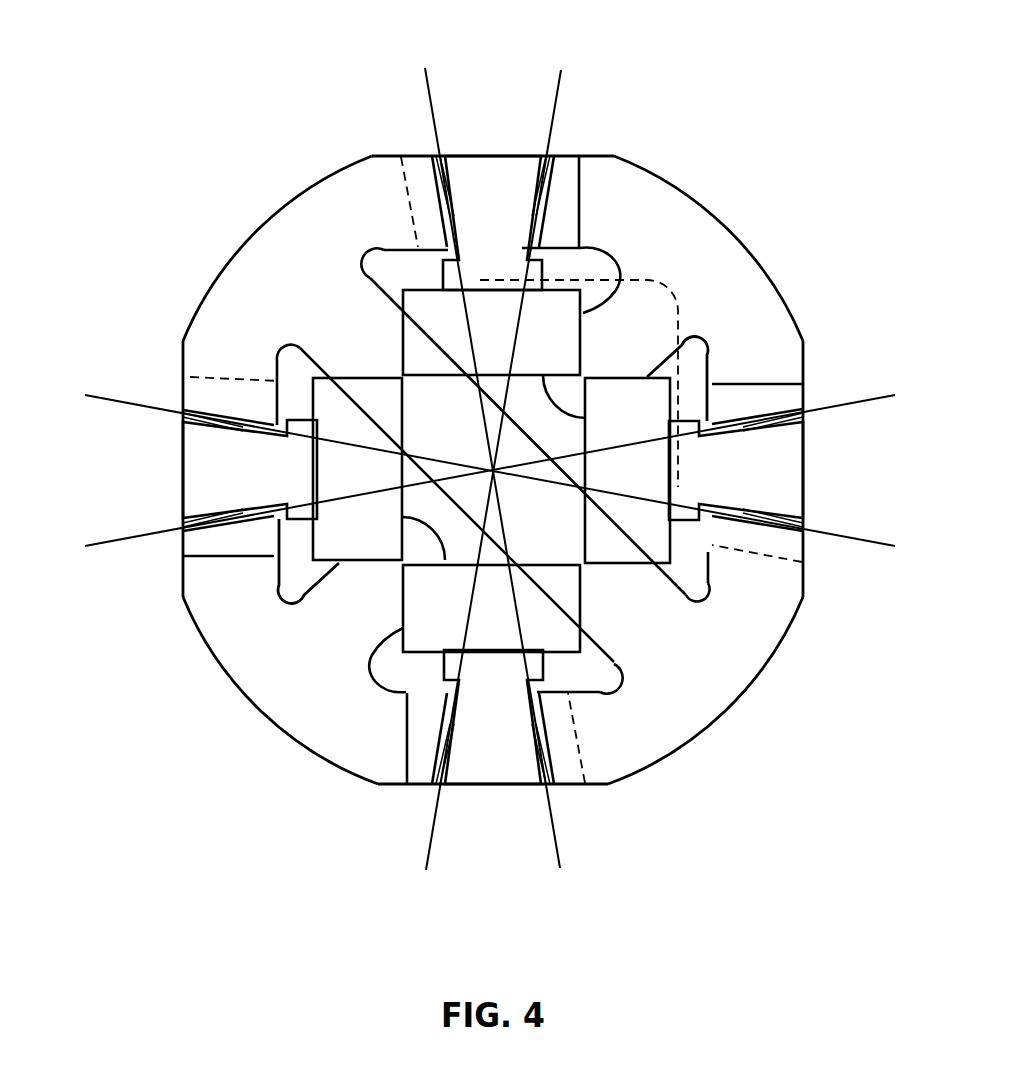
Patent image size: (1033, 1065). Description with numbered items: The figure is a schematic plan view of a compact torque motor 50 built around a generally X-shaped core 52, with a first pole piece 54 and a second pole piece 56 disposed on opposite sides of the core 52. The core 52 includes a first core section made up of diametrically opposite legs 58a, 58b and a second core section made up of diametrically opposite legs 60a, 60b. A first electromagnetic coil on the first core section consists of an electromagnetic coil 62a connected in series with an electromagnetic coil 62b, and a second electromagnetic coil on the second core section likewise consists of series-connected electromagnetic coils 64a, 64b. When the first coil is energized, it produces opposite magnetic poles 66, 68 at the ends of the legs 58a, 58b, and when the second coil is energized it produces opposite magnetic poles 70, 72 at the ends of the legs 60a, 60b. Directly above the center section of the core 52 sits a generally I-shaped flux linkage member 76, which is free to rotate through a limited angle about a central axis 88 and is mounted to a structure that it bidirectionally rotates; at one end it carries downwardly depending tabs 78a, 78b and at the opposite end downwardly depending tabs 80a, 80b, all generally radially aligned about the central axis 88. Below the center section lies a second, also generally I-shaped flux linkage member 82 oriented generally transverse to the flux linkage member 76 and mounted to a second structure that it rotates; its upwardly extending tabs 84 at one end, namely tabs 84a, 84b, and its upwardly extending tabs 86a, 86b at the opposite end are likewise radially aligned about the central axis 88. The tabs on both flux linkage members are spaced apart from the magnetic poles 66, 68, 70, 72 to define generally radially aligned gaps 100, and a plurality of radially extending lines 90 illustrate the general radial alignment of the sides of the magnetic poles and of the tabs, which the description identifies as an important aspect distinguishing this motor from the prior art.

The torque motor 50 is at (240, 703).
The core 52 is at (567, 391).
The first pole piece 54 is at (745, 714).
The second pole piece 56 is at (766, 270).
The leg 58a is at (497, 156).
The leg 58b is at (513, 788).
The leg 60a is at (806, 482).
The leg 60b is at (183, 482).
The electromagnetic coil 62a is at (563, 300).
The electromagnetic coil 62b is at (420, 617).
The electromagnetic coil 64a is at (705, 378).
The electromagnetic coil 64b is at (343, 540).
The magnetic pole 66 is at (506, 211).
The magnetic pole 68 is at (506, 761).
The magnetic pole 70 is at (774, 486).
The magnetic pole 72 is at (234, 486).
The flux linkage member 76 is at (584, 566).
The downwardly depending tab 78a is at (222, 395).
The downwardly depending tab 78b is at (418, 196).
The downwardly depending tab 80a is at (563, 755).
The downwardly depending tab 80b is at (768, 556).
The flux linkage member 82 is at (632, 344).
The tabs 84 is at (447, 516).
The upwardly extending tab 84a is at (568, 188).
The upwardly extending tab 84b is at (763, 398).
The upwardly extending tab 86a is at (417, 750).
The upwardly extending tab 86b is at (222, 556).
The central axis 88 is at (492, 470).
The radially extending lines 90 is at (427, 86).
The gaps 100 is at (437, 157).